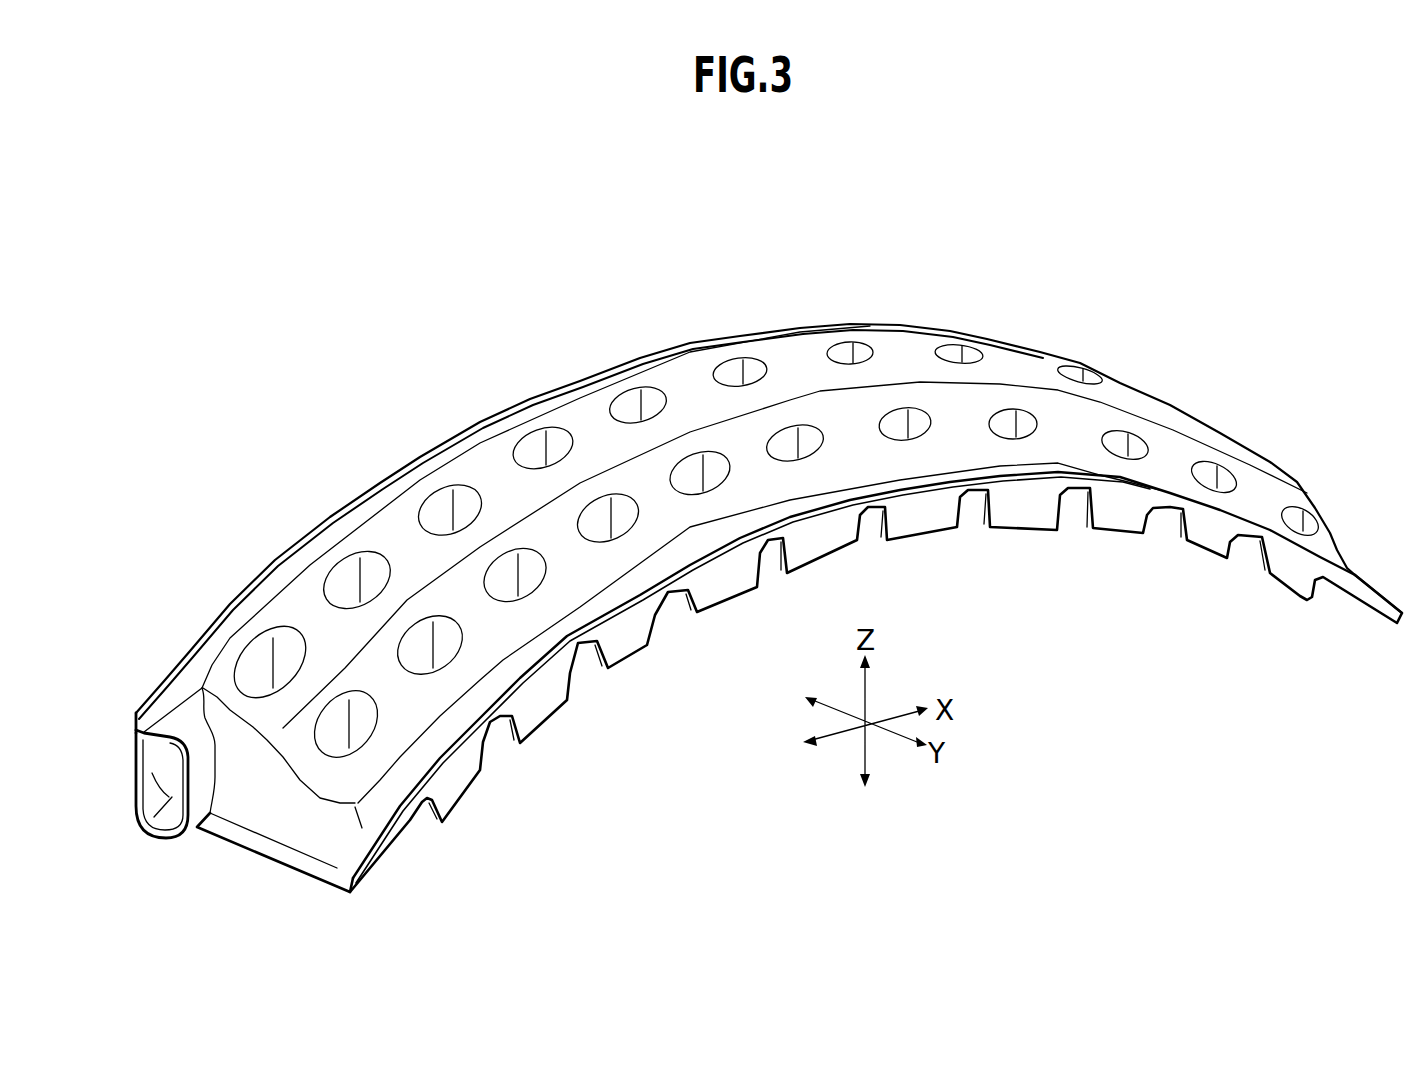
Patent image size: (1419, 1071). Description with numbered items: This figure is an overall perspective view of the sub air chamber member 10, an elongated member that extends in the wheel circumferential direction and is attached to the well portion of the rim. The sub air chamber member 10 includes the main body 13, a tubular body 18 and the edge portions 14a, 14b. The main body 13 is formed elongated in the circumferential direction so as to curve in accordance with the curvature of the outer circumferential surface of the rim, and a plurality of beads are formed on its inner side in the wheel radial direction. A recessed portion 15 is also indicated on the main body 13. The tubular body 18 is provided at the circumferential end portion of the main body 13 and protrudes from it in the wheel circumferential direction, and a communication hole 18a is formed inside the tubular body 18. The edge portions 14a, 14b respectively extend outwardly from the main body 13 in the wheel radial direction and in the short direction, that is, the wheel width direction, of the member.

The sub air chamber member 10 is at (986, 298).
The main body 13 is at (587, 422).
The edge portion 14a is at (387, 832).
The edge portion 14b is at (377, 503).
The recessed portion 15 is at (733, 447).
The tubular body 18 is at (182, 730).
The communication hole 18a is at (136, 793).